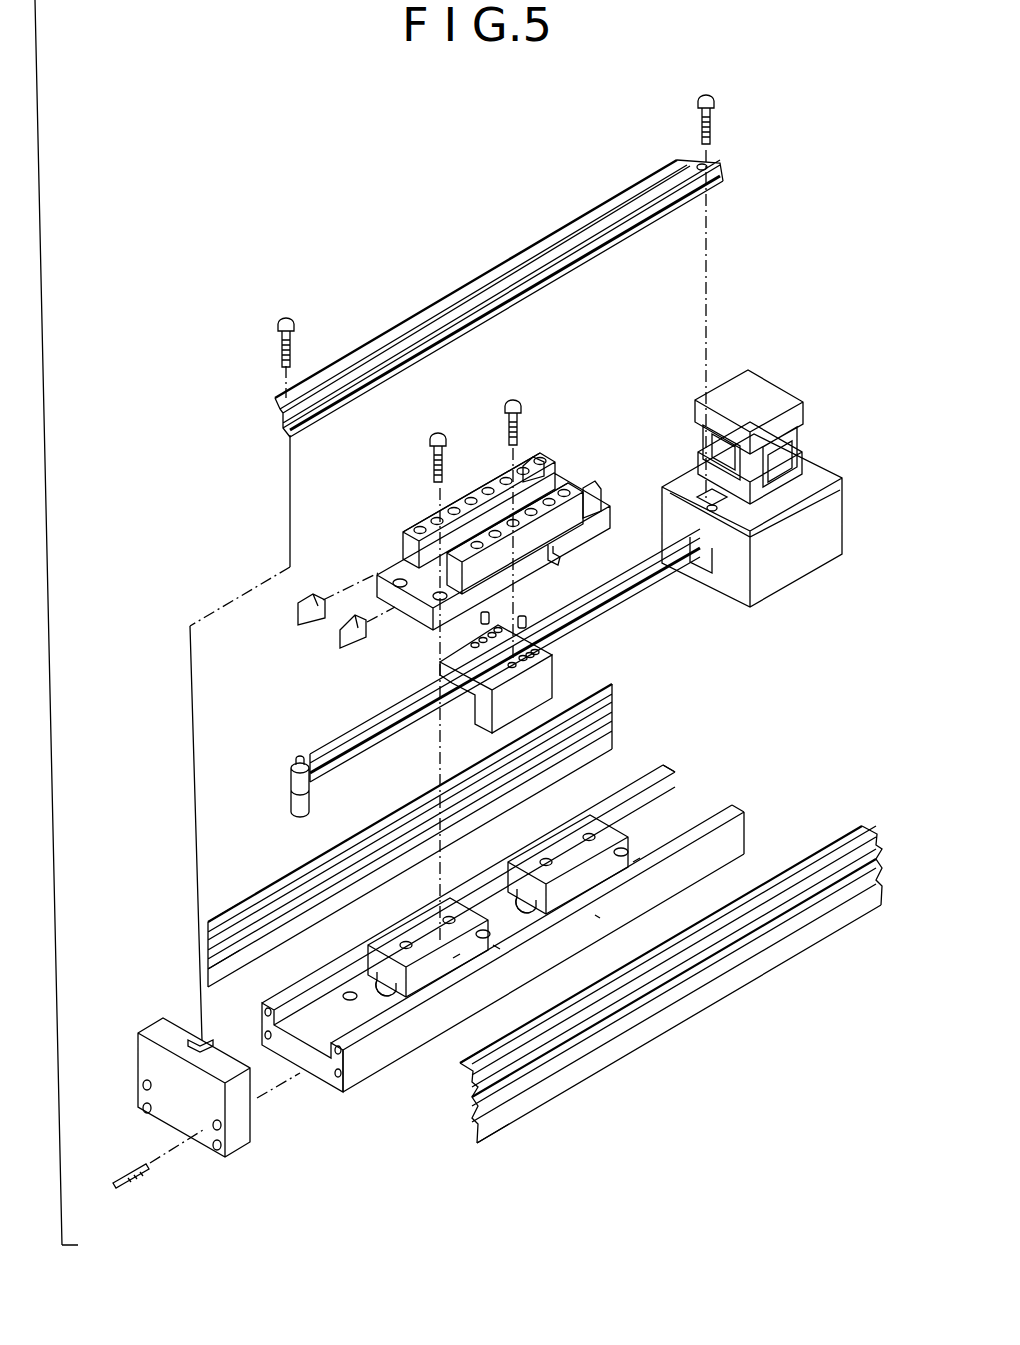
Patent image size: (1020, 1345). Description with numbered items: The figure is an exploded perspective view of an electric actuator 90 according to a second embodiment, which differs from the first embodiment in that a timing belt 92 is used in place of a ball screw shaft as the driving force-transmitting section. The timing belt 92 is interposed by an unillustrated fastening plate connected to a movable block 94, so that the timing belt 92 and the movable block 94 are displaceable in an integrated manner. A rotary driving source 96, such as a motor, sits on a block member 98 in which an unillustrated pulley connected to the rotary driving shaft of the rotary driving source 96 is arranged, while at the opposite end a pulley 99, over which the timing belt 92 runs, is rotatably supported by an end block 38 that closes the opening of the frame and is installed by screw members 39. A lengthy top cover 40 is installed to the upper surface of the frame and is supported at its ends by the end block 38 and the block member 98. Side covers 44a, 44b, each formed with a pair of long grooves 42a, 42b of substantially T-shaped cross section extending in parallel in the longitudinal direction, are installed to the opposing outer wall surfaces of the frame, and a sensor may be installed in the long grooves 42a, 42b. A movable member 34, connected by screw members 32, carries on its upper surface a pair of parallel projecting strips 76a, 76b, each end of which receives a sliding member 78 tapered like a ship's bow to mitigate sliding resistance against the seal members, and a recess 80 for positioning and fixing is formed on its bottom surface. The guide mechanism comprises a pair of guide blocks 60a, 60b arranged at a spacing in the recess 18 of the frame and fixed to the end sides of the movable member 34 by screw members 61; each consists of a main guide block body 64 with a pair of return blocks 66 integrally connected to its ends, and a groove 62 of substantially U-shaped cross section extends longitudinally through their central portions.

The recess 18 is at (687, 803).
The screw members 32 is at (516, 400).
The movable member 34 is at (563, 467).
The end block 38 is at (150, 1058).
The screw members 39 is at (128, 1182).
The top cover 40 is at (497, 290).
The long groove 42a is at (205, 930).
The long groove 42b is at (213, 960).
The side cover 44a is at (715, 990).
The side cover 44b is at (280, 857).
The guide block 60a is at (423, 977).
The guide block 60b is at (627, 892).
The screw members 61 is at (432, 435).
The groove 62 is at (596, 804).
The main guide block body 64 is at (633, 862).
The return blocks 66 is at (733, 827).
The projecting strip 76a is at (460, 507).
The projecting strip 76b is at (502, 533).
The sliding member 78 is at (543, 460).
The recess 80 is at (620, 581).
The electric actuator 90 is at (848, 178).
The timing belt 92 is at (650, 595).
The movable block 94 is at (543, 685).
The rotary driving source 96 is at (783, 447).
The block member 98 is at (798, 558).
The pulley 99 is at (292, 773).